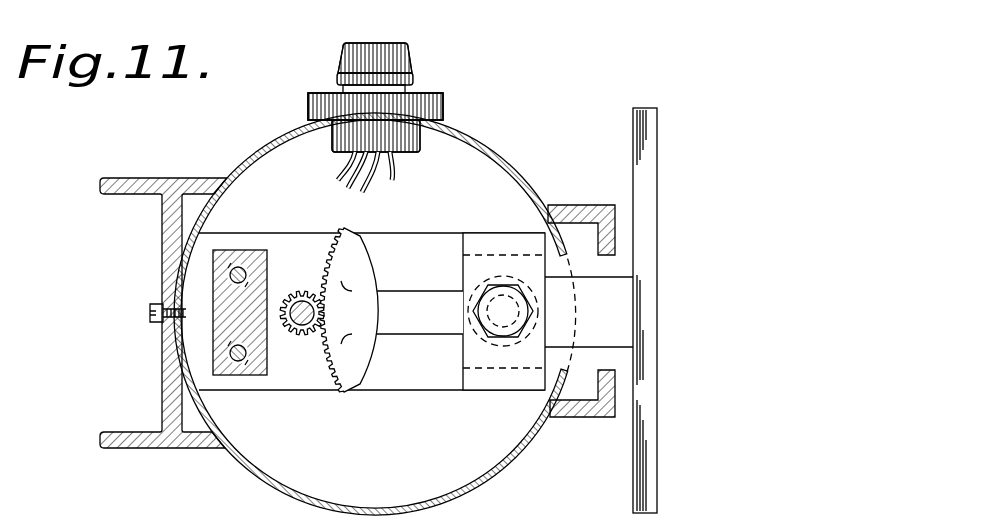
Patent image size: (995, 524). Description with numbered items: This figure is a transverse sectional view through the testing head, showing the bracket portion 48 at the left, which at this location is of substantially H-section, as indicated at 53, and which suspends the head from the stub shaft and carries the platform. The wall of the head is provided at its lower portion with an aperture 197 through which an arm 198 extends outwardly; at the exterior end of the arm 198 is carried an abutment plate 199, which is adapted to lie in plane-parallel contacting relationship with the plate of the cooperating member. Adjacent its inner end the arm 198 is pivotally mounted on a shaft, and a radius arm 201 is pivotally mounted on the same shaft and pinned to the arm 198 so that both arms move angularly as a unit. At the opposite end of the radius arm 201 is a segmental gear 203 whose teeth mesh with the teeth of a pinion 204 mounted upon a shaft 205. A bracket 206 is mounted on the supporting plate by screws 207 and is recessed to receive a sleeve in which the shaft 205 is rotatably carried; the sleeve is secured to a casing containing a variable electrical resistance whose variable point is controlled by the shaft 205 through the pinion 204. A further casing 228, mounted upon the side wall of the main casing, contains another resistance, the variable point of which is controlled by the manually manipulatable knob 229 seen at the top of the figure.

The bracket portion 48 is at (154, 259).
The H-section of the bracket 53 is at (162, 350).
The aperture 197 is at (567, 357).
The arm 198 is at (595, 275).
The abutment plate 199 is at (657, 283).
The radius arm 201 is at (413, 290).
The segmental gear 203 is at (331, 253).
The pinion 204 is at (297, 293).
The shaft 205 is at (302, 326).
The bracket 206 is at (236, 377).
The screws 207 is at (238, 272).
The casing 228 is at (423, 132).
The knob 229 is at (411, 56).